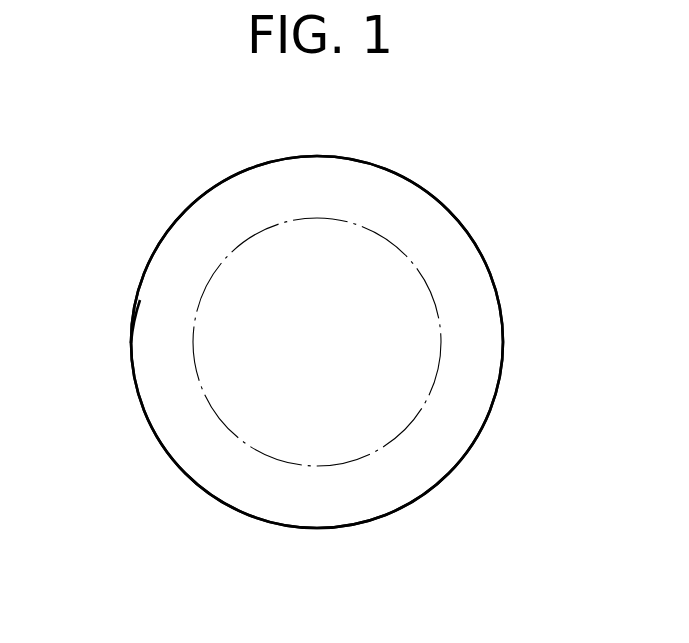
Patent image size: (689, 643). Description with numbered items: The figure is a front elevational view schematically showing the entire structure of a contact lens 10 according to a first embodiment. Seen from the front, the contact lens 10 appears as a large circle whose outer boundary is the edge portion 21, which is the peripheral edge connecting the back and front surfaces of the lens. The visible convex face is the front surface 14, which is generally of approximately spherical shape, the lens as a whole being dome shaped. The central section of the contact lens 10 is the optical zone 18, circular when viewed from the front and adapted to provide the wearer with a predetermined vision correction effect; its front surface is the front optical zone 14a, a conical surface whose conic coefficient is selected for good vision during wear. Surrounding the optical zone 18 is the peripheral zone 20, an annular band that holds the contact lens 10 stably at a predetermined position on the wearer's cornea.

The contact lens 10 is at (447, 149).
The front surface 14 is at (457, 423).
The front optical zone 14a is at (418, 338).
The optical zone 18 is at (336, 349).
The peripheral zone 20 is at (338, 506).
The edge portion 21 is at (131, 344).